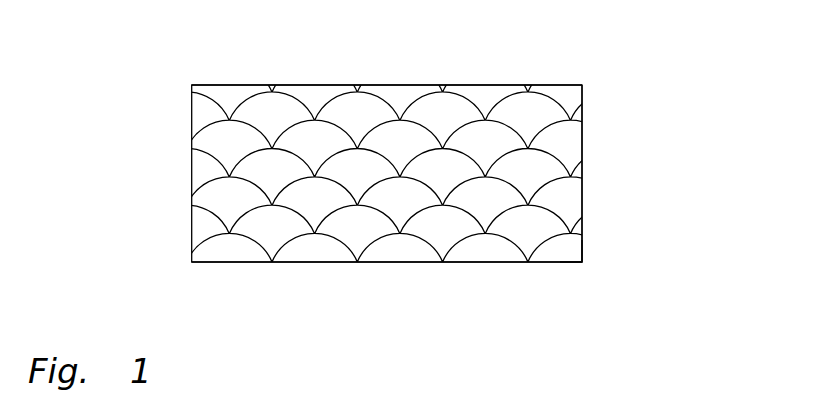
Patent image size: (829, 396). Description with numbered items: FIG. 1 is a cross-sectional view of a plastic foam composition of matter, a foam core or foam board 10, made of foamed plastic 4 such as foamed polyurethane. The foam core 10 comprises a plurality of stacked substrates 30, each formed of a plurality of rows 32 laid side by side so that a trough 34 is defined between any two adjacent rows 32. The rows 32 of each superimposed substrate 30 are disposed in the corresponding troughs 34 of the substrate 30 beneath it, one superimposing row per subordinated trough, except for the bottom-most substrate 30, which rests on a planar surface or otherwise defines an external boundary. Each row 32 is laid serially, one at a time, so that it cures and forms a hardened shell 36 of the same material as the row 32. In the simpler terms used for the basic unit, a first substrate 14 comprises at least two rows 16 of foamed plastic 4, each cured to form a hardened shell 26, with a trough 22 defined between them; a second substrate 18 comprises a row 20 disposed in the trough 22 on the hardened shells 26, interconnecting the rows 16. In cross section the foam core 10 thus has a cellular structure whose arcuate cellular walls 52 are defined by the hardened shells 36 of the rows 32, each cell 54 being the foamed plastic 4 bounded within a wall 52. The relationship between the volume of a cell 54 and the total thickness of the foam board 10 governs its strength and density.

The foam core 10 is at (597, 62).
The foamed plastic 4 is at (572, 102).
The cell 54 is at (538, 115).
The cellular wall 52 is at (540, 135).
The substrate 18 is at (583, 197).
The row 20 is at (570, 213).
The substrate 14 is at (583, 248).
The row 16 is at (577, 263).
The row 32 is at (567, 252).
The trough 22 is at (552, 258).
The hardened shell 26 is at (512, 240).
The trough 34 is at (528, 263).
The substrate 30 is at (208, 128).
The hardened shell 36 is at (242, 232).